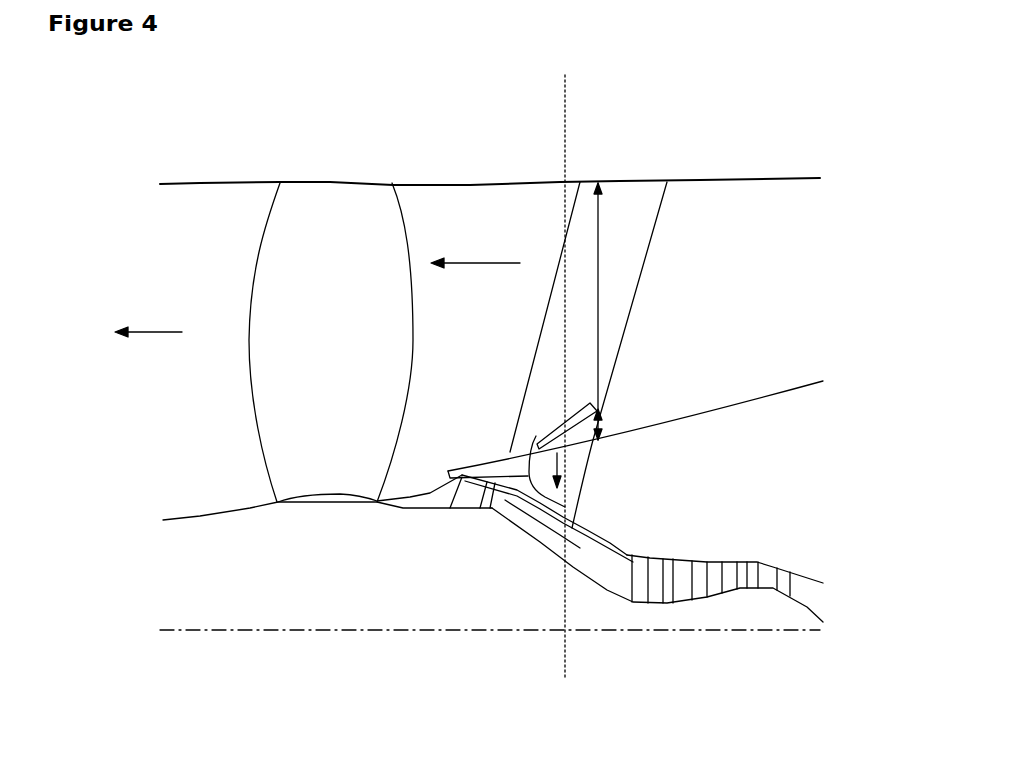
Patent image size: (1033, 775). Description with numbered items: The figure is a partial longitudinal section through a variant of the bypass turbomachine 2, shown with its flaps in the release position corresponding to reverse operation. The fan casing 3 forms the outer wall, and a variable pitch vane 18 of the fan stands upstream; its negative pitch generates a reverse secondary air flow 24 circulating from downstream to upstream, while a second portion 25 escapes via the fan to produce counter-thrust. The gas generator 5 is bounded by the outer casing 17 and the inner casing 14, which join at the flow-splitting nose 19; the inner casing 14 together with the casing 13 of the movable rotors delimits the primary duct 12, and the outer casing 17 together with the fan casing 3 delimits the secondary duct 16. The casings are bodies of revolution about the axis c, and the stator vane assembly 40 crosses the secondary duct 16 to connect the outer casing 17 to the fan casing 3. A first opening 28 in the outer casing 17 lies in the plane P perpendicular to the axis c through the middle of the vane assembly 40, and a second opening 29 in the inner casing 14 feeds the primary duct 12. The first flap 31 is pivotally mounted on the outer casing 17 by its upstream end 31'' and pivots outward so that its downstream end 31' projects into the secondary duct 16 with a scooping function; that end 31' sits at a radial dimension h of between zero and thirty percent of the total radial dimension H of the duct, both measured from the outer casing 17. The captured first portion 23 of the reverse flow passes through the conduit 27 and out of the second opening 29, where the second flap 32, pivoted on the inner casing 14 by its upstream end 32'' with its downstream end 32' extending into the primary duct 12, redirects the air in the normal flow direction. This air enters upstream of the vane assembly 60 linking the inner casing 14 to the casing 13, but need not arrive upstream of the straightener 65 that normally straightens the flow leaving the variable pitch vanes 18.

The bypass turbomachine 2 is at (117, 281).
The fan casing 3 is at (773, 182).
The gas generator 5 is at (773, 392).
The primary duct 12 is at (618, 577).
The casing of the movable rotors 13 is at (463, 510).
The inner casing 14 is at (587, 552).
The secondary duct 16 is at (753, 283).
The outer casing 17 is at (660, 420).
The variable pitch vane 18 is at (297, 295).
The flow-splitting nose 19 is at (470, 465).
The first portion of the reverse secondary flow 23 is at (577, 462).
The reverse secondary air flow 24 is at (475, 262).
The second portion of the reverse secondary flow 25 is at (148, 333).
The conduit 27 is at (567, 501).
The first opening 28 is at (568, 421).
The second opening 29 is at (560, 550).
The first flap 31 is at (556, 317).
The downstream end of the first flap 31' is at (629, 355).
The upstream end of the first flap 31'' is at (495, 389).
The second flap 32 is at (520, 541).
The downstream end of the second flap 32' is at (505, 577).
The upstream end of the second flap 32'' is at (476, 536).
The stator vane assembly 40 is at (642, 294).
The vane assembly 60 is at (663, 603).
The straightener 65 is at (445, 492).
The total radial dimension of the secondary duct H is at (598, 263).
The radial dimension of the first flap downstream ends h is at (603, 424).
The plane P is at (570, 102).
The axis of revolution c is at (206, 630).